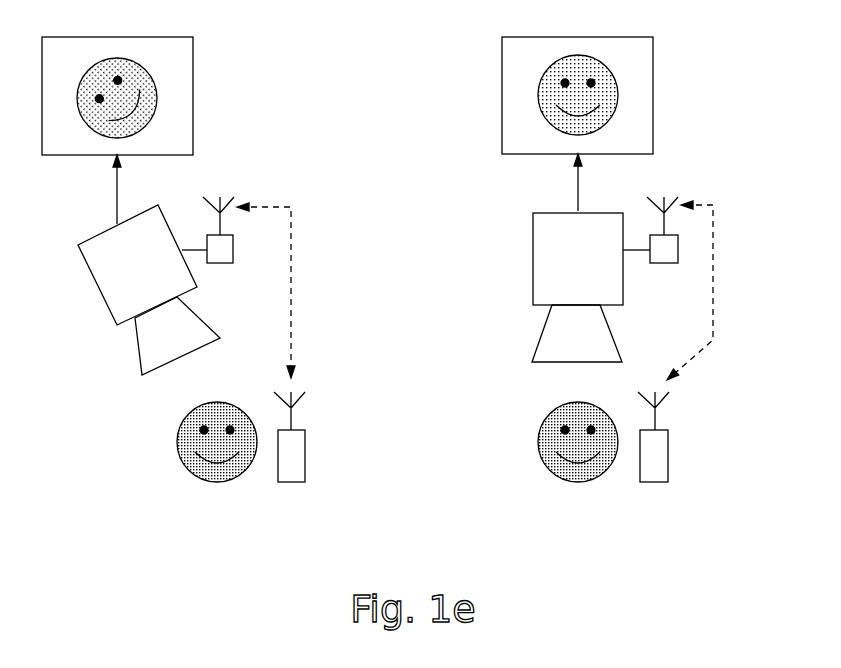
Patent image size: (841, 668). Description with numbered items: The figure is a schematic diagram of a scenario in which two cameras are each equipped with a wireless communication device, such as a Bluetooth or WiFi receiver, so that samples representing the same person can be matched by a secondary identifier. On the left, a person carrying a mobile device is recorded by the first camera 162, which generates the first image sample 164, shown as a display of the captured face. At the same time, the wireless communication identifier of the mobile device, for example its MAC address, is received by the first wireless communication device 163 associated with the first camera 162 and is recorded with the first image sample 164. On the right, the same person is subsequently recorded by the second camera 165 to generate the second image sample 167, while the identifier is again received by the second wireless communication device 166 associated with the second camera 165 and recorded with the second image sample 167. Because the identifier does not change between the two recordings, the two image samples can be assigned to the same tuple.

The first camera 162 is at (100, 295).
The first wireless communication device 163 is at (228, 263).
The first image sample 164 is at (193, 155).
The second camera 165 is at (533, 293).
The second wireless communication device 166 is at (665, 263).
The second image sample 167 is at (653, 154).